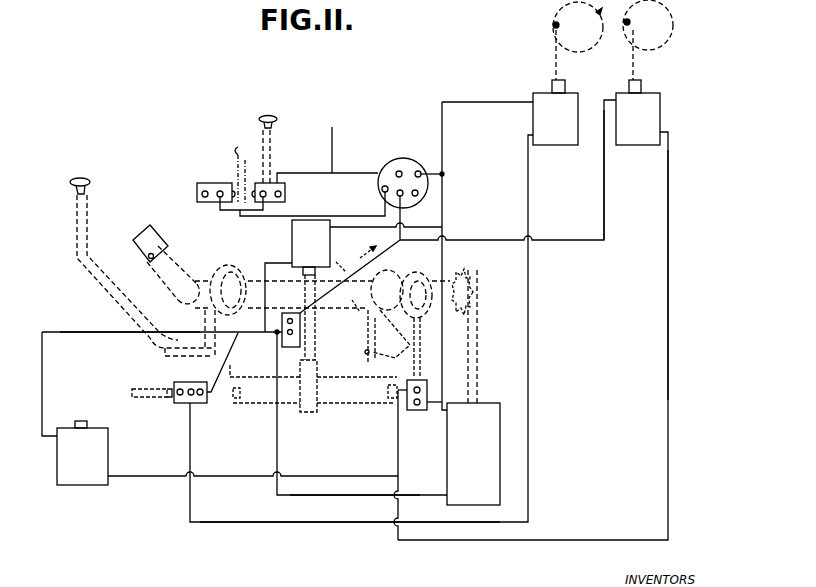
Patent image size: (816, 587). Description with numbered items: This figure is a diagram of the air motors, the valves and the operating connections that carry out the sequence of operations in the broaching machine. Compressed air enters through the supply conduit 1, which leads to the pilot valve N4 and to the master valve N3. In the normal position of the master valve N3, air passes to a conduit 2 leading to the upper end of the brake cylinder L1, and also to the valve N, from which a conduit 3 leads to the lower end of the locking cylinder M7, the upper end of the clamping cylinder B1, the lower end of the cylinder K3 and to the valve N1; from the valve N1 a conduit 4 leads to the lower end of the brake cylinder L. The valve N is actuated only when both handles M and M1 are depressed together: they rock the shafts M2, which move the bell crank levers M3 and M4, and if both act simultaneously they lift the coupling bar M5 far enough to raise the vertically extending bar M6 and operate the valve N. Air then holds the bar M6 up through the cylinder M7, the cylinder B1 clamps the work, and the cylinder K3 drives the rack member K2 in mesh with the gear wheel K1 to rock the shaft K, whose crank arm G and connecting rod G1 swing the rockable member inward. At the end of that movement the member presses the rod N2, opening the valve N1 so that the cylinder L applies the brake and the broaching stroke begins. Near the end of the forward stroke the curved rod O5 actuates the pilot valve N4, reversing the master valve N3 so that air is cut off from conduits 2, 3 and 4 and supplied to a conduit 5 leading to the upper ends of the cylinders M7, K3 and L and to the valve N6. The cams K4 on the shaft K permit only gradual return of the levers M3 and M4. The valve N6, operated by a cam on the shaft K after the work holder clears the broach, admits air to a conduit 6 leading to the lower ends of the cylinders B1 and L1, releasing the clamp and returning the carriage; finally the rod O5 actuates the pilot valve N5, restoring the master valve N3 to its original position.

The conduit 1 is at (333, 163).
The conduit 2 is at (607, 220).
The conduit 3 is at (345, 506).
The conduit 4 is at (238, 526).
The conduit 5 is at (356, 230).
The conduit 6 is at (665, 312).
The air cylinder B1 is at (88, 482).
The crank arm G is at (190, 272).
The connecting rod G1 is at (155, 228).
The rock shaft K is at (352, 305).
The gear wheel K1 is at (468, 268).
The rack member K2 is at (473, 357).
The air cylinder K3 is at (473, 454).
The cams K4 is at (238, 265).
The brake cylinder L is at (556, 140).
The brake cylinder L1 is at (637, 140).
The handle M is at (80, 176).
The handle M1 is at (268, 115).
The rock shaft M2 is at (380, 396).
The bell crank lever M3 is at (180, 333).
The bell crank lever M4 is at (362, 335).
The coupling bar M5 is at (256, 410).
The vertically extending bar M6 is at (306, 420).
The air cylinder M7 is at (311, 247).
The air valve N is at (292, 350).
The valve N1 is at (203, 412).
The rod N2 is at (145, 404).
The master valve N3 is at (402, 158).
The pilot valve N4 is at (286, 186).
The pilot valve N5 is at (206, 182).
The valve N6 is at (420, 412).
The curved rod O5 is at (238, 170).